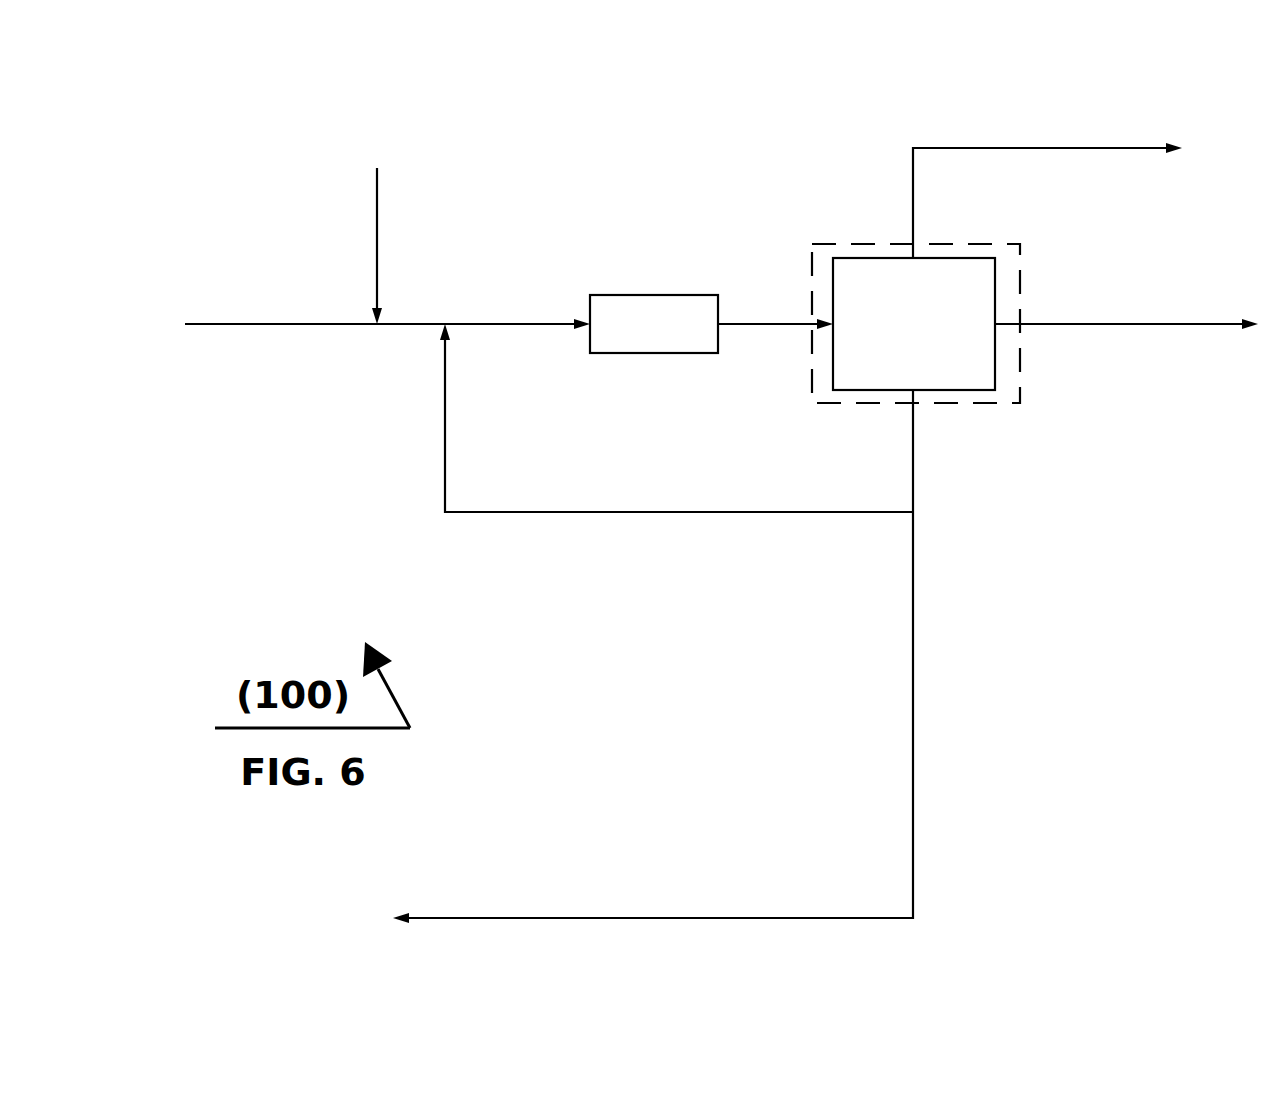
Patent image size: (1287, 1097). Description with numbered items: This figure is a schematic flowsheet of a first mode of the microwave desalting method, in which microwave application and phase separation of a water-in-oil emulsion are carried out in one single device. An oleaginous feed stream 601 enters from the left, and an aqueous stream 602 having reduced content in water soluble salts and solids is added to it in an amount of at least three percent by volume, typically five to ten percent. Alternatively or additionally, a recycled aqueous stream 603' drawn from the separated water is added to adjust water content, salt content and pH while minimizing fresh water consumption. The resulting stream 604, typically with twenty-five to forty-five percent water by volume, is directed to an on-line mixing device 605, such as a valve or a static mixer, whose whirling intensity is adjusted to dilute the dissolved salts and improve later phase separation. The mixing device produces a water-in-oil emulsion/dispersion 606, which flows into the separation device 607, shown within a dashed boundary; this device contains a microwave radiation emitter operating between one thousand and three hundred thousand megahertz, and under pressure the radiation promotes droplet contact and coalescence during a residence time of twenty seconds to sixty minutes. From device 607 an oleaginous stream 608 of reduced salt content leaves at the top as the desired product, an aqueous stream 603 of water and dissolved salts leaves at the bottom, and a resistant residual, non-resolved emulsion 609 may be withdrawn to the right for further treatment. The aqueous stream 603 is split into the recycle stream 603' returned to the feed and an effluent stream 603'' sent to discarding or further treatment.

The feed stream 601 is at (237, 313).
The aqueous stream 602 is at (367, 260).
The aqueous stream 603 is at (977, 451).
The additional aqueous stream 603' is at (676, 418).
The aqueous effluent stream 603'' is at (708, 717).
The resulting stream 604 is at (543, 320).
The mixing device 605 is at (656, 272).
The water-in-oil emulsion/dispersion 606 is at (748, 317).
The microwave phase separation device 607 is at (1032, 380).
The oleaginous stream 608 is at (1080, 140).
The resistant residual emulsion stream 609 is at (1120, 313).